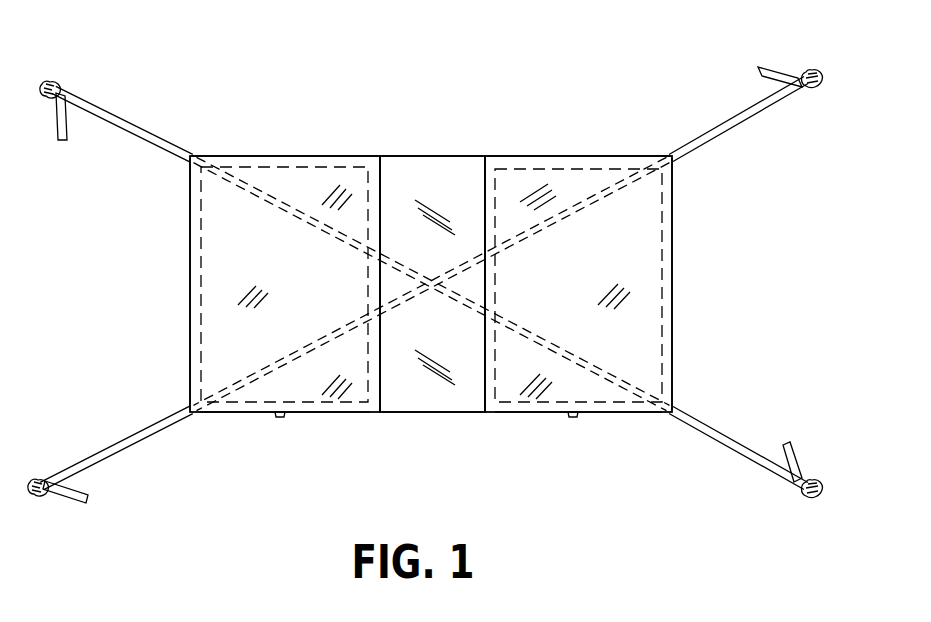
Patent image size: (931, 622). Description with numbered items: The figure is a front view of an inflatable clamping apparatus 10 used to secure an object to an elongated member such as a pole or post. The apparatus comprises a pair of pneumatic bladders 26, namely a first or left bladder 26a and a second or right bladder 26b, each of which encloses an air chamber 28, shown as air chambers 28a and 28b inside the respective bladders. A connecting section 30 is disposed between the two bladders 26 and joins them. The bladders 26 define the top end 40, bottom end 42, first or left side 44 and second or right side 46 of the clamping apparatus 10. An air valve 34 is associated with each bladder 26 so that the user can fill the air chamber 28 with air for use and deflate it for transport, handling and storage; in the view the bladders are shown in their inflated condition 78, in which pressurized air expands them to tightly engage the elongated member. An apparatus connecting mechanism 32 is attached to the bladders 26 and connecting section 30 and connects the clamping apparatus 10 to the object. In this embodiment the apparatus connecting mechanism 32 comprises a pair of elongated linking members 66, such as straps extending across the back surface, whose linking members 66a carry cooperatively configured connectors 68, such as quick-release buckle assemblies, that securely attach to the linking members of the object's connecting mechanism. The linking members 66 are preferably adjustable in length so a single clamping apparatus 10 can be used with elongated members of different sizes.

The inflatable clamping apparatus 10 is at (452, 291).
The pneumatic bladder 26 is at (186, 338).
The first/left bladder 26a is at (278, 156).
The second/right bladder 26b is at (567, 165).
The air chamber 28 is at (636, 232).
The air chamber 28a is at (224, 257).
The air chamber 28b is at (642, 335).
The connecting section 30 is at (420, 168).
The apparatus connecting mechanism 32 is at (96, 433).
The air valve 34 is at (283, 418).
The top end 40 is at (400, 133).
The bottom end 42 is at (435, 428).
The first or left side 44 is at (168, 280).
The second or right side 46 is at (688, 290).
The elongated linking member 66 is at (105, 118).
The linking member of the apparatus connecting mechanism 66a is at (155, 143).
The connector 68 is at (52, 82).
The inflated condition 78 is at (243, 428).